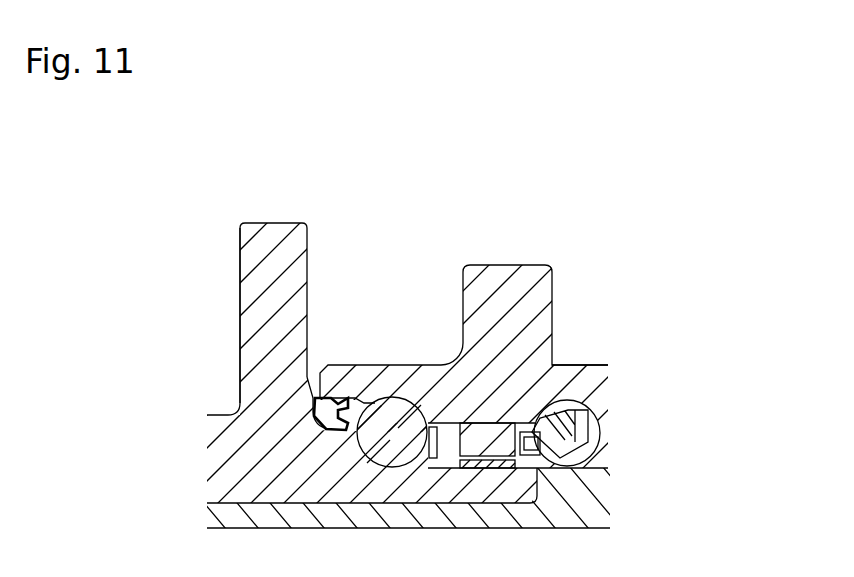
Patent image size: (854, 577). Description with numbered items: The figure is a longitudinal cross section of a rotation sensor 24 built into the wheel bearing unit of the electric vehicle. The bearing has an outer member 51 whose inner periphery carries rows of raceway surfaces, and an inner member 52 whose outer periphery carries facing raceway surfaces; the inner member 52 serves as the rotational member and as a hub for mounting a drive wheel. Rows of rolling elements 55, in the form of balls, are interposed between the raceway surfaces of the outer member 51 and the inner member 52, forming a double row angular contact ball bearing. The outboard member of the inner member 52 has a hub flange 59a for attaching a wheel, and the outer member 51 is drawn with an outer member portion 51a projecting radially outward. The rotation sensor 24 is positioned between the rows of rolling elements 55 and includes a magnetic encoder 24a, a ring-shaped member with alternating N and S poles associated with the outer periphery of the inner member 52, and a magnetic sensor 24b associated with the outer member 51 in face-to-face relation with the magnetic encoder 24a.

The inner member 52 is at (240, 468).
The hub flange 59a is at (258, 248).
The outer member 51 is at (417, 363).
The flange portion of inner ring 51a is at (497, 278).
The rolling elements 55 is at (392, 408).
The rotation sensor 24 is at (802, 297).
The magnetic encoder 24a is at (487, 466).
The magnetic sensor 24b is at (545, 368).